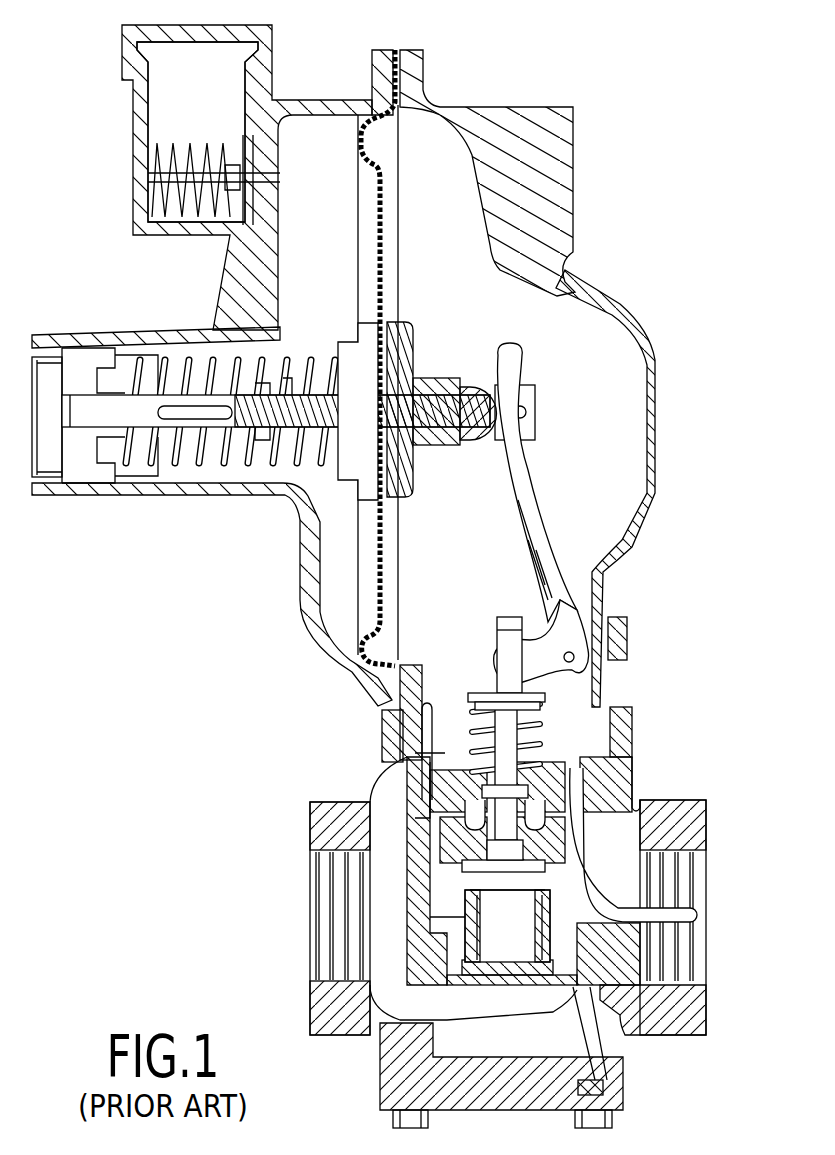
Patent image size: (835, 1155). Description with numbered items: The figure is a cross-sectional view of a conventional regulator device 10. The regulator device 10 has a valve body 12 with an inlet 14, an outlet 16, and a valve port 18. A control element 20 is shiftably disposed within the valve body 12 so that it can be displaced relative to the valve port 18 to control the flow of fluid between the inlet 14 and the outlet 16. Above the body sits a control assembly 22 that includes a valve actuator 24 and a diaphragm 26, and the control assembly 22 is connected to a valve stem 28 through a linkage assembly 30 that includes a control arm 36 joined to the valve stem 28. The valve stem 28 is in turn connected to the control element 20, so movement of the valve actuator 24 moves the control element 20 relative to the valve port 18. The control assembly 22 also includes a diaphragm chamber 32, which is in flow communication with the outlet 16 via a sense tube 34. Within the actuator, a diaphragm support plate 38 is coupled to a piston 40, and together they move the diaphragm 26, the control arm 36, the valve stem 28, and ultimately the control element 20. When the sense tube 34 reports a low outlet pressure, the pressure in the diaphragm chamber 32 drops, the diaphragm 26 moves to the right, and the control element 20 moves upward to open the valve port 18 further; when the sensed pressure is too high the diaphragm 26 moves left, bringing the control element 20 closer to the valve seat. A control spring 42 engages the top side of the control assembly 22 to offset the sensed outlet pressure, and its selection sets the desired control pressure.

The regulator device 10 is at (232, 854).
The valve body 12 is at (380, 1067).
The inlet 14 is at (315, 957).
The outlet 16 is at (697, 957).
The valve port 18 is at (513, 930).
The control element 20 is at (632, 762).
The control assembly 22 is at (108, 509).
The valve actuator 24 is at (80, 340).
The diaphragm 26 is at (383, 192).
The valve stem 28 is at (478, 728).
The linkage assembly 30 is at (592, 473).
The diaphragm chamber 32 is at (585, 350).
The sense tube 34 is at (557, 857).
The control arm 36 is at (565, 612).
The diaphragm support plate 38 is at (415, 360).
The piston 40 is at (257, 412).
The control spring 42 is at (328, 425).